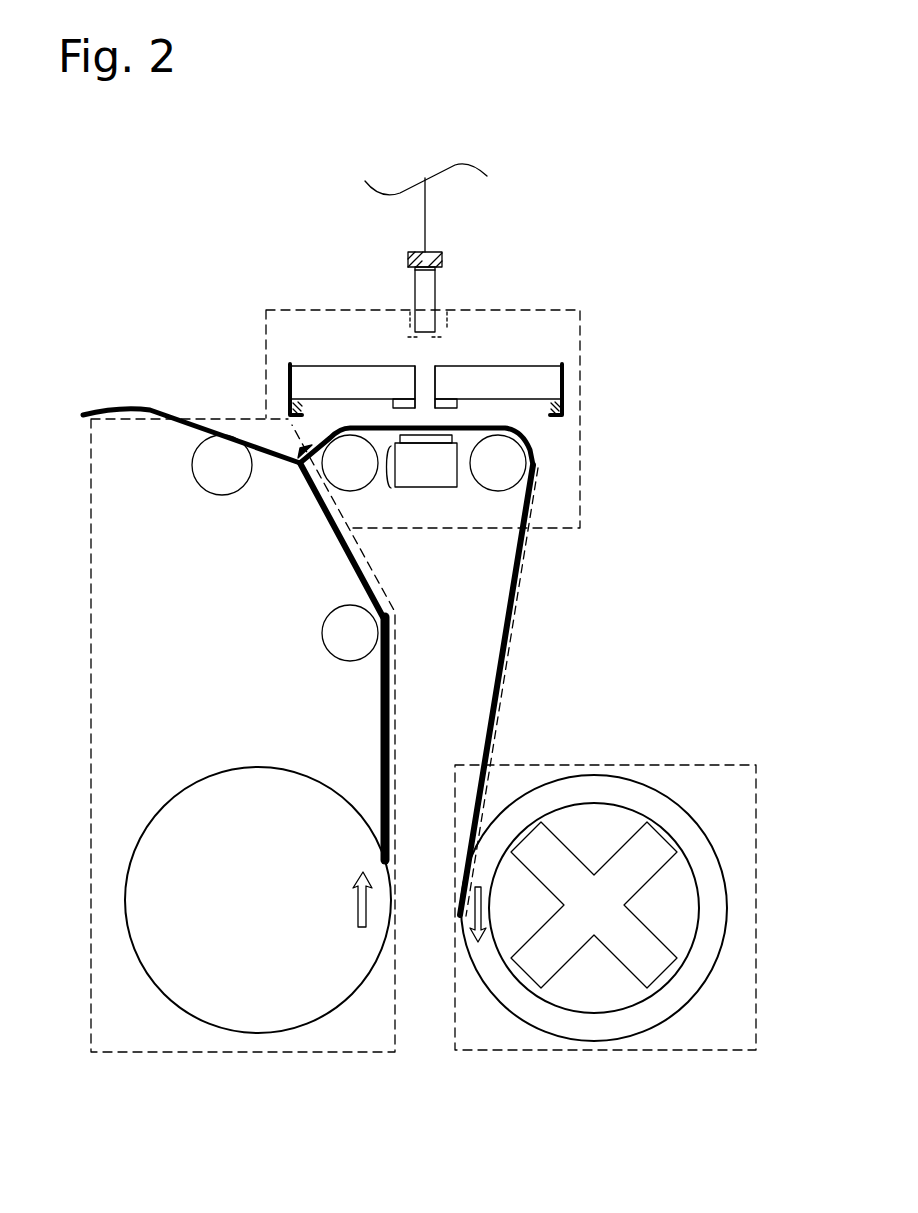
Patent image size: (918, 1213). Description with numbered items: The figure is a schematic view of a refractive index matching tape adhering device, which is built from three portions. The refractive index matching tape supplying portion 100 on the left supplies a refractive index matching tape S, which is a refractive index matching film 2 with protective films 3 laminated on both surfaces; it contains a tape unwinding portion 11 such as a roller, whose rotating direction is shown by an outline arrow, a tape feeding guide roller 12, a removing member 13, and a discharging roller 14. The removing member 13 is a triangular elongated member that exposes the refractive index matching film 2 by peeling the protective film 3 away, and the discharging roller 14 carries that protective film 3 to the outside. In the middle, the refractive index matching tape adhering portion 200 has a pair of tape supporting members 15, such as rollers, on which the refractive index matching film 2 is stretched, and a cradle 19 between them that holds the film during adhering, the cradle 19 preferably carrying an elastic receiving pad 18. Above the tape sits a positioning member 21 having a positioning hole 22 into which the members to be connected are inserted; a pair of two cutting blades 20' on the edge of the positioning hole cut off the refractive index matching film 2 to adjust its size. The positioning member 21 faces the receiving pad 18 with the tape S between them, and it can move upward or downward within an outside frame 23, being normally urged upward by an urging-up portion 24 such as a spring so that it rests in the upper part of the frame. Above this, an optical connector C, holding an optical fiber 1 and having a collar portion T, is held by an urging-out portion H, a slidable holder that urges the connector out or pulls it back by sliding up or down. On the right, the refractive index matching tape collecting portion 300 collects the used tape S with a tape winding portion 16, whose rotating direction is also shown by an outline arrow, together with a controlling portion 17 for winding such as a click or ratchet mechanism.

The optical fiber 1 is at (427, 206).
The urging-out portion H is at (410, 254).
The collar portion T is at (413, 283).
The optical connector C is at (436, 288).
The refractive index matching tape adhering portion 200 is at (580, 310).
The refractive index matching tape supplying portion 100 is at (92, 1010).
The refractive index matching tape collecting portion 300 is at (756, 1005).
The positioning member 21 is at (356, 366).
The positioning hole 22 is at (424, 378).
The outside frame 23 is at (300, 358).
The urging-up portion 24 is at (302, 405).
The cutting blades 20' is at (474, 371).
The tape supporting members 15 is at (352, 491).
The receiving pad 18 is at (392, 484).
The cradle 19 is at (434, 488).
The refractive index matching film 2 is at (506, 650).
The protective film 3 is at (150, 410).
The refractive index matching tape S is at (393, 727).
The removing member 13 is at (294, 466).
The discharging roller 14 is at (202, 492).
The tape feeding guide roller 12 is at (322, 648).
The tape unwinding portion 11 is at (165, 992).
The tape winding portion 16 is at (683, 1000).
The controlling portion 17 is at (660, 840).